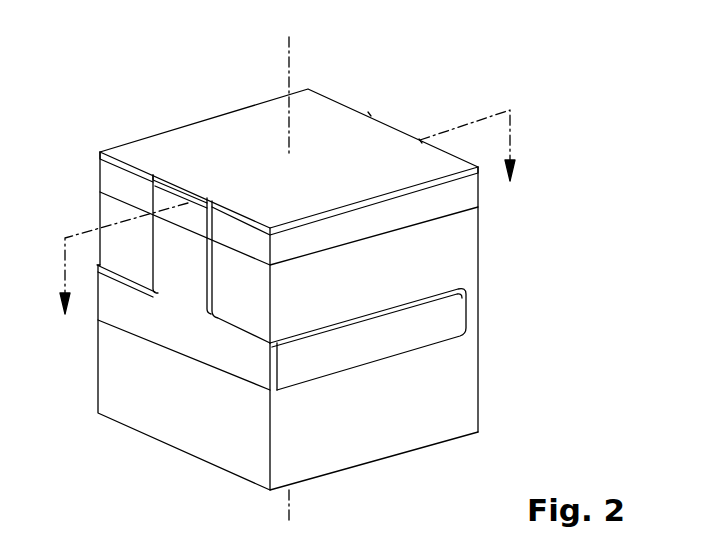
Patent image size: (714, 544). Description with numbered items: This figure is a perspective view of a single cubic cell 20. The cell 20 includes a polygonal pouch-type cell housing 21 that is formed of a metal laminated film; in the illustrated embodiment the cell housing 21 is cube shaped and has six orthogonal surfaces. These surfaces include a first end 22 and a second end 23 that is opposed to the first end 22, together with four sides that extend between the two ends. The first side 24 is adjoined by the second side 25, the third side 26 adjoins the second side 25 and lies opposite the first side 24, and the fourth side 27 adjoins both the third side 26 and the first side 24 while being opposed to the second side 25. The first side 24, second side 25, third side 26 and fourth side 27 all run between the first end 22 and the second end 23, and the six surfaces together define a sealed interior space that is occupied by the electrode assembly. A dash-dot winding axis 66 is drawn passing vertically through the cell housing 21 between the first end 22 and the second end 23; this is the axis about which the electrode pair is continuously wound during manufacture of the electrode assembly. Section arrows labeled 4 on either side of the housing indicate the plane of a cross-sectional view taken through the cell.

The cell 20 is at (128, 114).
The cell housing 21 is at (460, 262).
The first end 22 is at (337, 115).
The second end 23 is at (378, 462).
The first side 24 is at (152, 415).
The second side 25 is at (463, 373).
The third side 26 is at (478, 230).
The fourth side 27 is at (99, 363).
The winding axis 66 is at (283, 77).
The section line 4- 4 is at (290, 213).